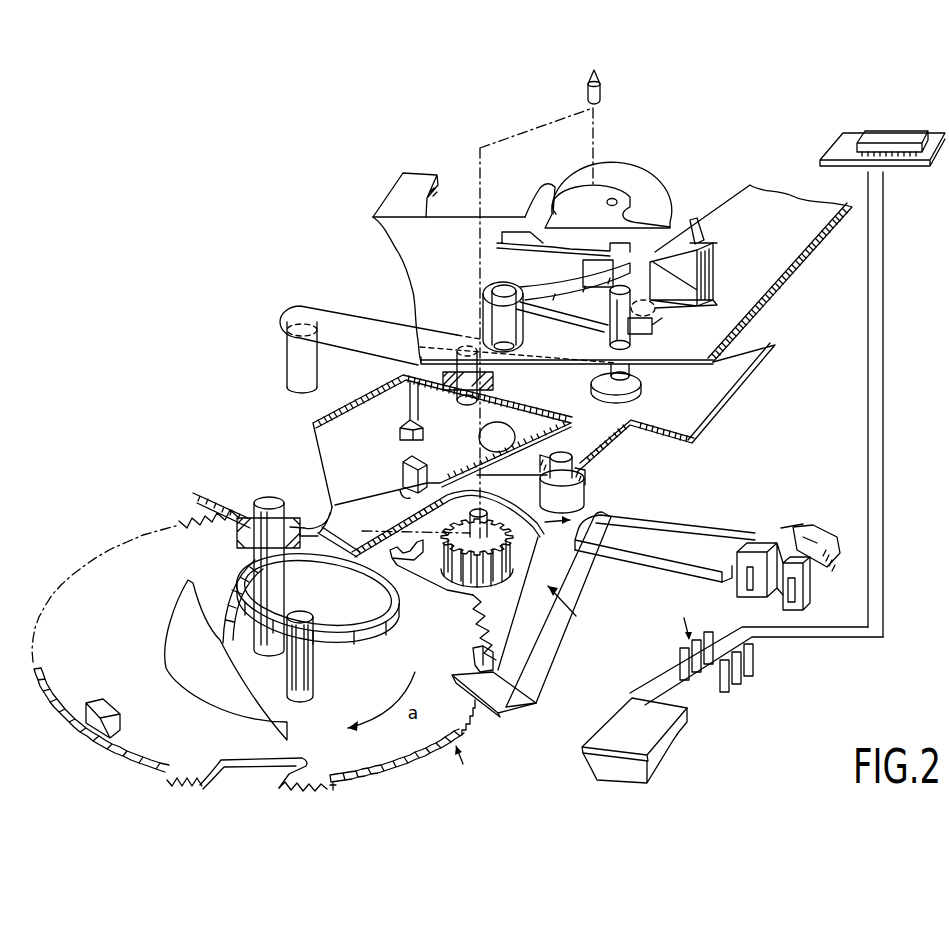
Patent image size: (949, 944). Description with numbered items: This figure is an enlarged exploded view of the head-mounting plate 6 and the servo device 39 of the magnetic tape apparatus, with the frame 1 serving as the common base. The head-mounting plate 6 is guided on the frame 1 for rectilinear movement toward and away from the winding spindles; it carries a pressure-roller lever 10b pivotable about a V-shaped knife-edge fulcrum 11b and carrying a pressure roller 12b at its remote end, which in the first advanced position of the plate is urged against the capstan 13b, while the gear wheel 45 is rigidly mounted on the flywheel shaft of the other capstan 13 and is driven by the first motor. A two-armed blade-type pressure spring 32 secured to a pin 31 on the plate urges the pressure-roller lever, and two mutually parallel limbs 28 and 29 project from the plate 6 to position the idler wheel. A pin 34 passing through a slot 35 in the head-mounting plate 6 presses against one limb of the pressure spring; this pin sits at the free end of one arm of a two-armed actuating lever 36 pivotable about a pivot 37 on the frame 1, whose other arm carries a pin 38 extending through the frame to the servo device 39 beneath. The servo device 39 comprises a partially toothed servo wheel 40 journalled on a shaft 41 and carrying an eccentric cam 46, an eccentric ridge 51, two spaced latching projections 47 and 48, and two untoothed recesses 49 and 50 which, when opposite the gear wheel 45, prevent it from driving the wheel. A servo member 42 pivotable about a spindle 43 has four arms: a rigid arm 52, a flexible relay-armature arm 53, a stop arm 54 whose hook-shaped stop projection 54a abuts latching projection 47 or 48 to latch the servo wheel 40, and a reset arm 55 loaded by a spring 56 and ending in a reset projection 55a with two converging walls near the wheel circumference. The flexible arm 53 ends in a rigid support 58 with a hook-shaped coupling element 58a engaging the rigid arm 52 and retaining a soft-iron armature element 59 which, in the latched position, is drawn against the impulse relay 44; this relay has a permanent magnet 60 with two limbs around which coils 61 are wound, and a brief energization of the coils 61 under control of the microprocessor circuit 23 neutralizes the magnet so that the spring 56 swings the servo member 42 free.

The frame 1 is at (697, 406).
The head-mounting plate 6 is at (785, 272).
The pressure-roller lever 10b is at (715, 252).
The knife-edge fulcrum 11b is at (705, 279).
The pressure roller 12b is at (638, 186).
The capstan 13 is at (486, 527).
The capstan 13b is at (586, 90).
The microprocessor circuit 23 is at (884, 130).
The limb 28 is at (400, 184).
The limb 29 is at (546, 190).
The pin 31 is at (500, 290).
The pressure spring 32 is at (543, 325).
The pin 34 is at (627, 333).
The slot 35 is at (652, 322).
The actuating lever 36 is at (598, 386).
The pivot 37 is at (462, 398).
The pin 38 is at (297, 372).
The servo device 39 is at (466, 743).
The servo wheel 40 is at (382, 750).
The shaft 41 is at (271, 500).
The servo member 42 is at (558, 609).
The spindle 43 is at (585, 478).
The impulse relay 44 is at (711, 644).
The gear wheel 45 is at (447, 533).
The cam 46 is at (360, 666).
The latching projection 47 is at (478, 656).
The latching projection 48 is at (105, 708).
The recess 49 is at (455, 594).
The recess 50 is at (234, 763).
The ridge 51 is at (207, 684).
The rigid arm 52 is at (690, 509).
The flexible relay-armature arm 53 is at (633, 556).
The stop arm 54 is at (530, 660).
The stop projection 54a is at (474, 701).
The reset arm 55 is at (384, 494).
The reset projection 55a is at (330, 500).
The spring 56 is at (515, 438).
The support 58 is at (815, 566).
The coupling element 58a is at (832, 545).
The soft-iron armature element 59 is at (794, 606).
The permanent magnet 60 is at (672, 752).
The coils 61 is at (750, 660).